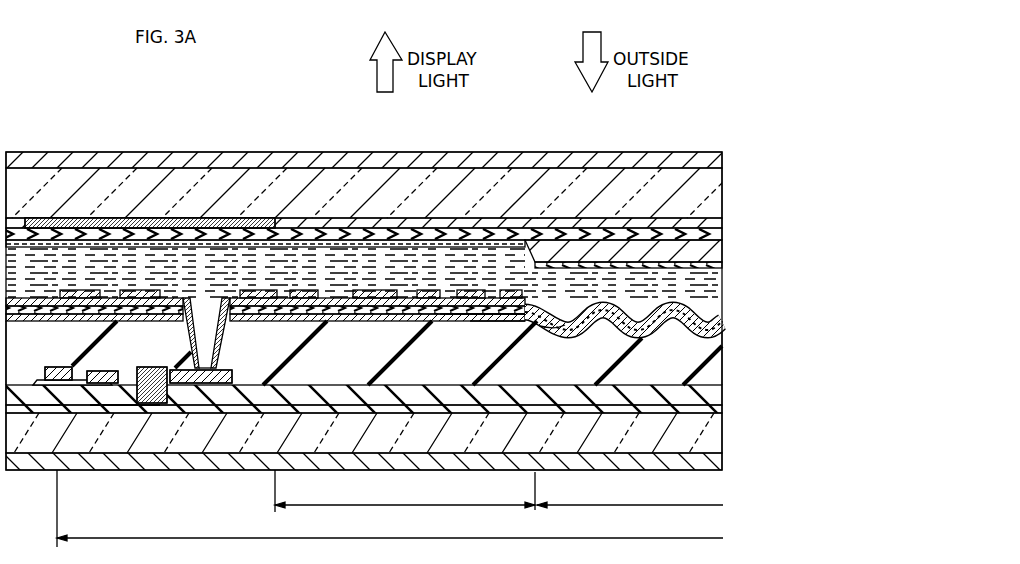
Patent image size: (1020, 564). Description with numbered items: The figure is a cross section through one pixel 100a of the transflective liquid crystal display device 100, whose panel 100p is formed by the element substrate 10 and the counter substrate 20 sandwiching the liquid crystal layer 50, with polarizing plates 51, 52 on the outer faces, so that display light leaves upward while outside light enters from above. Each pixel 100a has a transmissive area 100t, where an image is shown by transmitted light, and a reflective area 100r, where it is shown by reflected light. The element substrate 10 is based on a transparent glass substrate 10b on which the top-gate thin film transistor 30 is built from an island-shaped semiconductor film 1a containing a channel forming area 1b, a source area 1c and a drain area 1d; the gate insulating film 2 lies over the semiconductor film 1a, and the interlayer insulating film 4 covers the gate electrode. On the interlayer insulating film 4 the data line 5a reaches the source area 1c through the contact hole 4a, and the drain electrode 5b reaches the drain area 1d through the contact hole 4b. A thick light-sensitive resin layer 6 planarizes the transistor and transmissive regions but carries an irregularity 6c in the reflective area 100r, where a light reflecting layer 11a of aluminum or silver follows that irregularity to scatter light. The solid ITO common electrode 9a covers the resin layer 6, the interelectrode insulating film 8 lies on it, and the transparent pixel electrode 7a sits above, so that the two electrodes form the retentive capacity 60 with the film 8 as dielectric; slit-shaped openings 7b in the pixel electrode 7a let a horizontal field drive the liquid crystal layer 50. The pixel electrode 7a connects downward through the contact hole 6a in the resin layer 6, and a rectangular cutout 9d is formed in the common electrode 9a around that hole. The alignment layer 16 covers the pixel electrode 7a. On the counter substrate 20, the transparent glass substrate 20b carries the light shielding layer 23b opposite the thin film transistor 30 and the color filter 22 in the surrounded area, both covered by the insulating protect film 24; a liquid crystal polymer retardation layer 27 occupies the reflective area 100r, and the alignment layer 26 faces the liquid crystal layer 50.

The liquid crystal display device 100 is at (94, 132).
The liquid crystal panel 100p is at (808, 460).
The pixel 100a is at (390, 508).
The transmissive area 100t is at (405, 491).
The reflective area 100r is at (630, 494).
The element substrate 10 is at (773, 310).
The transparent substrate 10b is at (728, 413).
The counter substrate 20 is at (773, 165).
The transparent substrate 20b is at (728, 168).
The liquid crystal layer 50 is at (728, 263).
The upper polarizing plate 51 is at (583, 152).
The lower polarizing plate 52 is at (720, 470).
The color filter 22 is at (376, 229).
The light shielding layer 23b is at (148, 218).
The insulating protect film 24 is at (322, 220).
The alignment layer 26 is at (474, 242).
The retardation layer 27 is at (684, 250).
The gate insulating film 2 is at (722, 410).
The interlayer insulating film 4 is at (722, 398).
The contact hole 4a is at (66, 382).
The contact hole 4b is at (157, 368).
The data line 5a is at (70, 367).
The drain electrode 5b is at (112, 372).
The resin layer 6 is at (728, 337).
The contact hole 6a is at (222, 340).
The irregularity 6c is at (598, 337).
The pixel electrode 7a is at (460, 320).
The openings 7b is at (387, 297).
The interelectrode insulating film 8 is at (722, 316).
The common electrode 9a is at (498, 322).
The cutout 9d is at (243, 297).
The light reflecting layer 11a is at (560, 326).
The alignment layer 16 is at (312, 298).
The thin film transistor 30 is at (105, 417).
The semiconductor film 1a is at (143, 417).
The channel forming area 1b is at (122, 417).
The source area 1c is at (52, 407).
The drain area 1d is at (175, 413).
The retentive capacity 60 is at (327, 323).